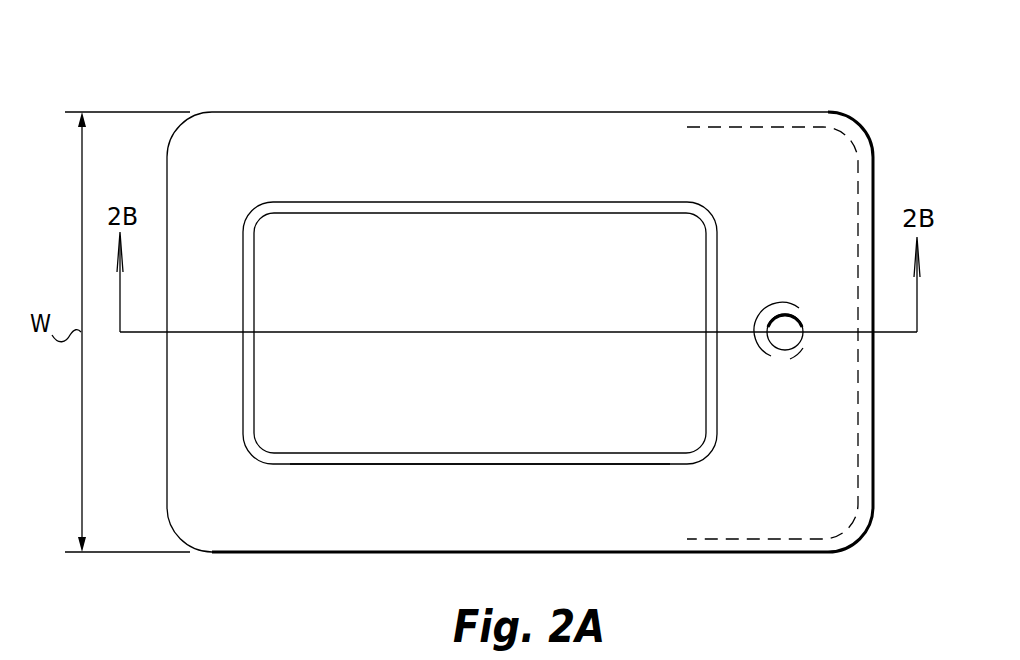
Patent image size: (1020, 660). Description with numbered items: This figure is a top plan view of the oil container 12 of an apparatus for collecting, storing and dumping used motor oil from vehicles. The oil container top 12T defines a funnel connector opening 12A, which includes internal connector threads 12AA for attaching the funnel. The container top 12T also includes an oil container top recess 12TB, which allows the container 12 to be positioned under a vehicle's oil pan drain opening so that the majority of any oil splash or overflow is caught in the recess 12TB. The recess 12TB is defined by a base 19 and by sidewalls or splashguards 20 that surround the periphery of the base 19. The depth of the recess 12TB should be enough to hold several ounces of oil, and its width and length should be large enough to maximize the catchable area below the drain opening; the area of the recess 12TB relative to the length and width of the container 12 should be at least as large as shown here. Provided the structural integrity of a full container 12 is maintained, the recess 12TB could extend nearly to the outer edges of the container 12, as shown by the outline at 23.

The oil container 12 is at (534, 78).
The oil container top 12T is at (640, 150).
The oil container top recess 12TB is at (410, 237).
The base 19 is at (303, 395).
The sidewalls or splashguards 20 is at (396, 463).
The funnel connector opening 12A is at (811, 324).
The internal connector threads 12AA is at (786, 350).
The extended recess outline 23 is at (770, 540).